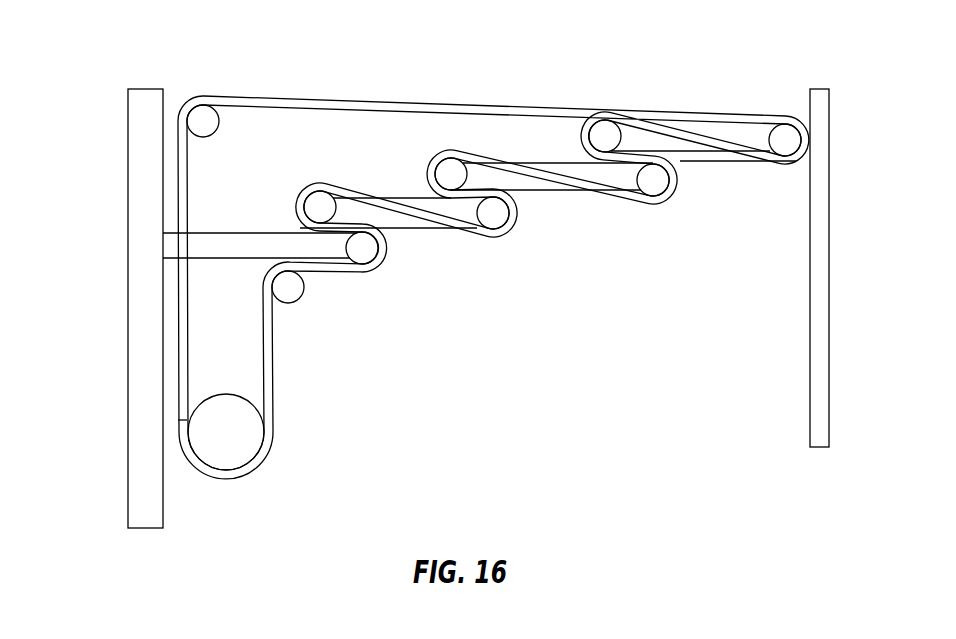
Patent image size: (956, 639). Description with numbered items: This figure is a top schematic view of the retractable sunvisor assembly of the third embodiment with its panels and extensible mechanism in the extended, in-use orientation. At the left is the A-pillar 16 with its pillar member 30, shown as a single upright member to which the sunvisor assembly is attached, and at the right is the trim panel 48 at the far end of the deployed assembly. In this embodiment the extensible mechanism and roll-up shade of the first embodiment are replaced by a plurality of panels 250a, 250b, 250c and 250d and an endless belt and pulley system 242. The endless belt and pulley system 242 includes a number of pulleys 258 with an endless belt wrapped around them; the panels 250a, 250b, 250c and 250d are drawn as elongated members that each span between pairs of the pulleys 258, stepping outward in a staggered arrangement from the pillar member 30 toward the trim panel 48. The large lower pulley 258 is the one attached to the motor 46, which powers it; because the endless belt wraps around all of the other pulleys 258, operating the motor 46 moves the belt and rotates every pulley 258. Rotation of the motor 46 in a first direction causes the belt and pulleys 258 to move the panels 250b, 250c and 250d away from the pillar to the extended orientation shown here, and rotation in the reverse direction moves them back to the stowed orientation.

The A-pillar 16 is at (122, 109).
The pillar member 30 is at (143, 89).
The trim panel 48 is at (830, 248).
The endless belt and pulley system 242 is at (676, 104).
The pulleys 258 is at (455, 185).
The motor 46 is at (238, 440).
The panel 250a is at (215, 236).
The panel 250b is at (390, 220).
The panel 250c is at (572, 175).
The panel 250d is at (752, 150).